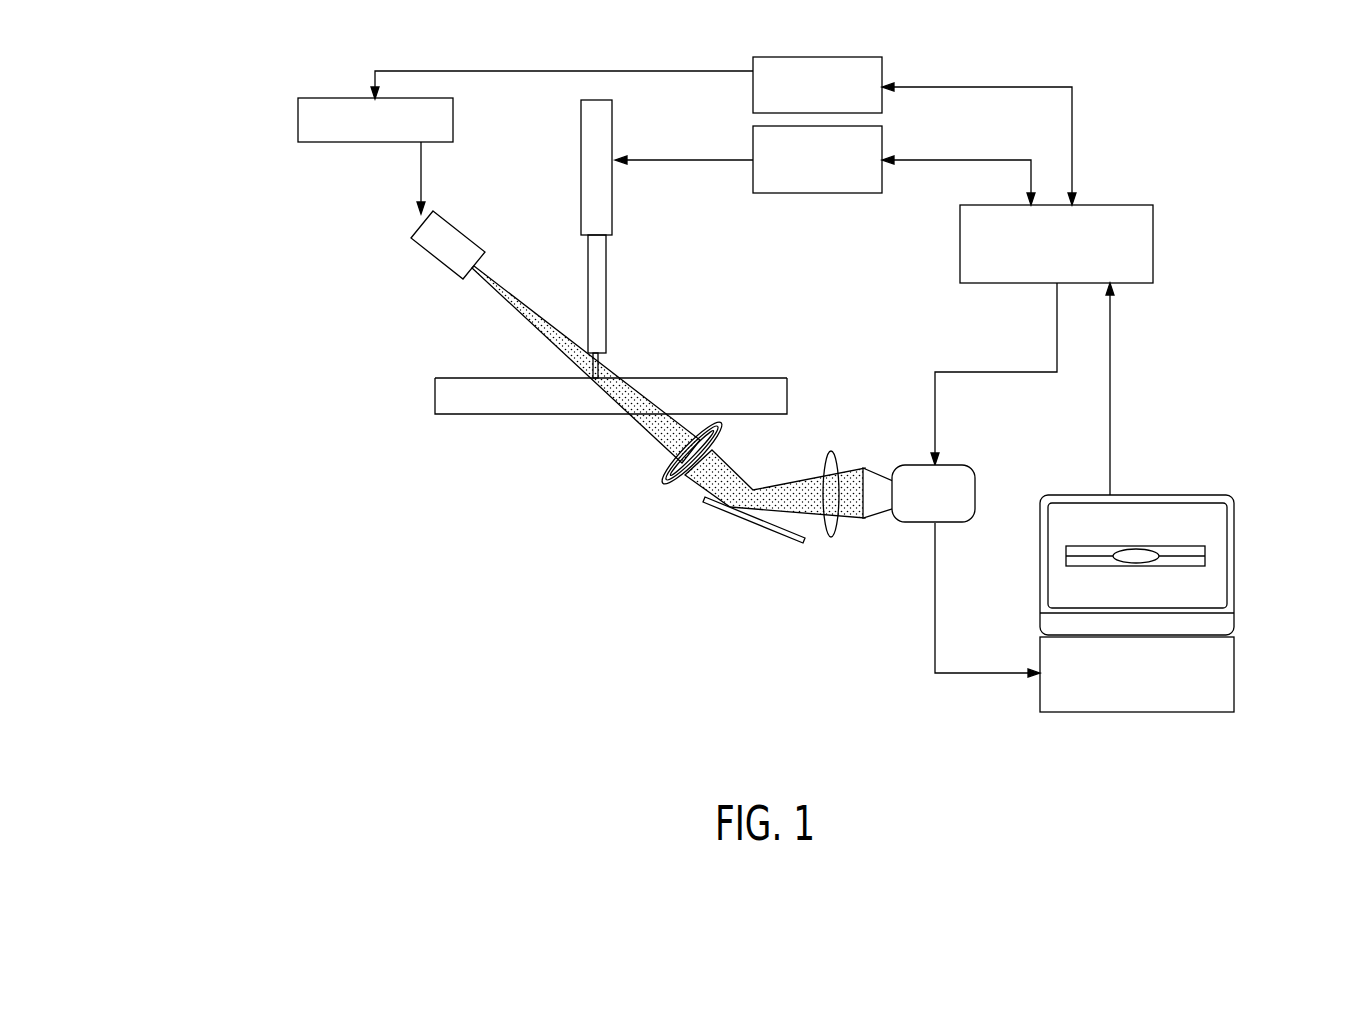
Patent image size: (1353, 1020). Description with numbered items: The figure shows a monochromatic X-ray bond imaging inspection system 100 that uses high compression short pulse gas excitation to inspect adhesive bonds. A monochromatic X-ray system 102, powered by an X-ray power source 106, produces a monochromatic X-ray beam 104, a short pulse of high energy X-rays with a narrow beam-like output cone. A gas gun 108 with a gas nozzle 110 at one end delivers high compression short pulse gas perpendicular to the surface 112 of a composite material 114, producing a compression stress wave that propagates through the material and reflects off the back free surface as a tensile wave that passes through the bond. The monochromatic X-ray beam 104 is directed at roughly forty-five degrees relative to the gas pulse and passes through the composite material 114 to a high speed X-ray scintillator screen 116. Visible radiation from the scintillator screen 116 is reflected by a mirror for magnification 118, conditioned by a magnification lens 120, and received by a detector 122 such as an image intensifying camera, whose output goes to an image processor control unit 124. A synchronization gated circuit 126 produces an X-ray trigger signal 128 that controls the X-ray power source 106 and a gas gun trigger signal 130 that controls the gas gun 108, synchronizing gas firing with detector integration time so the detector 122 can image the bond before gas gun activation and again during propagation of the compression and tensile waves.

The monochromatic X-ray bond imaging inspection system 100 is at (128, 70).
The monochromatic X-ray system 102 is at (422, 252).
The monochromatic X-ray beam 104 is at (524, 305).
The X-ray power source 106 is at (298, 118).
The gas gun 108 is at (582, 150).
The gas nozzle 110 is at (607, 357).
The surface 112 is at (463, 377).
The composite material 114 is at (410, 397).
The high speed X-ray scintillator screen 116 is at (663, 483).
The mirror for magnification 118 is at (755, 523).
The magnification lens 120 is at (832, 537).
The detector 122 is at (975, 487).
The image processor control unit 124 is at (1235, 677).
The synchronization gated circuit 126 is at (1155, 243).
The X-ray trigger signal 128 is at (883, 62).
The gas gun trigger signal 130 is at (883, 138).